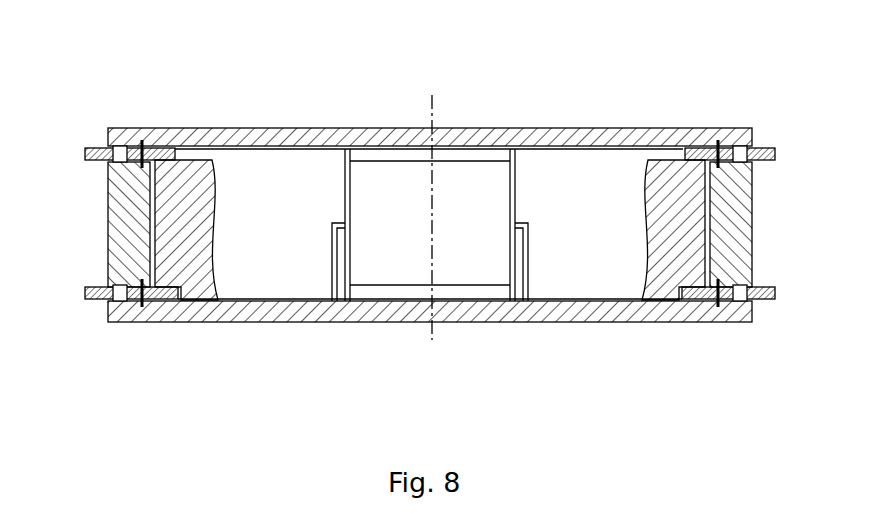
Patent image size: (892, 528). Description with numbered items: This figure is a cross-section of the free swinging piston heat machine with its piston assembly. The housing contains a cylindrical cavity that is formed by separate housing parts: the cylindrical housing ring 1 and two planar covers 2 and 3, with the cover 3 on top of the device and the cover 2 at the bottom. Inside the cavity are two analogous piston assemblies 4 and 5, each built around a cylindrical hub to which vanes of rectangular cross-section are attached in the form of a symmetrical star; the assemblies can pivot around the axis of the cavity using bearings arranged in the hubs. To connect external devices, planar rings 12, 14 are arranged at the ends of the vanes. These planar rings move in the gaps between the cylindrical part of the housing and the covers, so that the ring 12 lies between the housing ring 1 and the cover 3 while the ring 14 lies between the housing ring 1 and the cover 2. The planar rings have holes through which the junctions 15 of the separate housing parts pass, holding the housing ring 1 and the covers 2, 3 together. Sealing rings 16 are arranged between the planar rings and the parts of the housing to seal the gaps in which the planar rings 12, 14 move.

The cylindrical housing ring 1 is at (729, 228).
The planar cover 2 is at (620, 309).
The planar cover 3 is at (662, 132).
The piston assembly 4 is at (376, 240).
The piston assembly 5 is at (252, 181).
The planar ring 12 is at (95, 152).
The planar ring 14 is at (92, 292).
The junction 15 is at (737, 148).
The sealing ring 16 is at (718, 308).